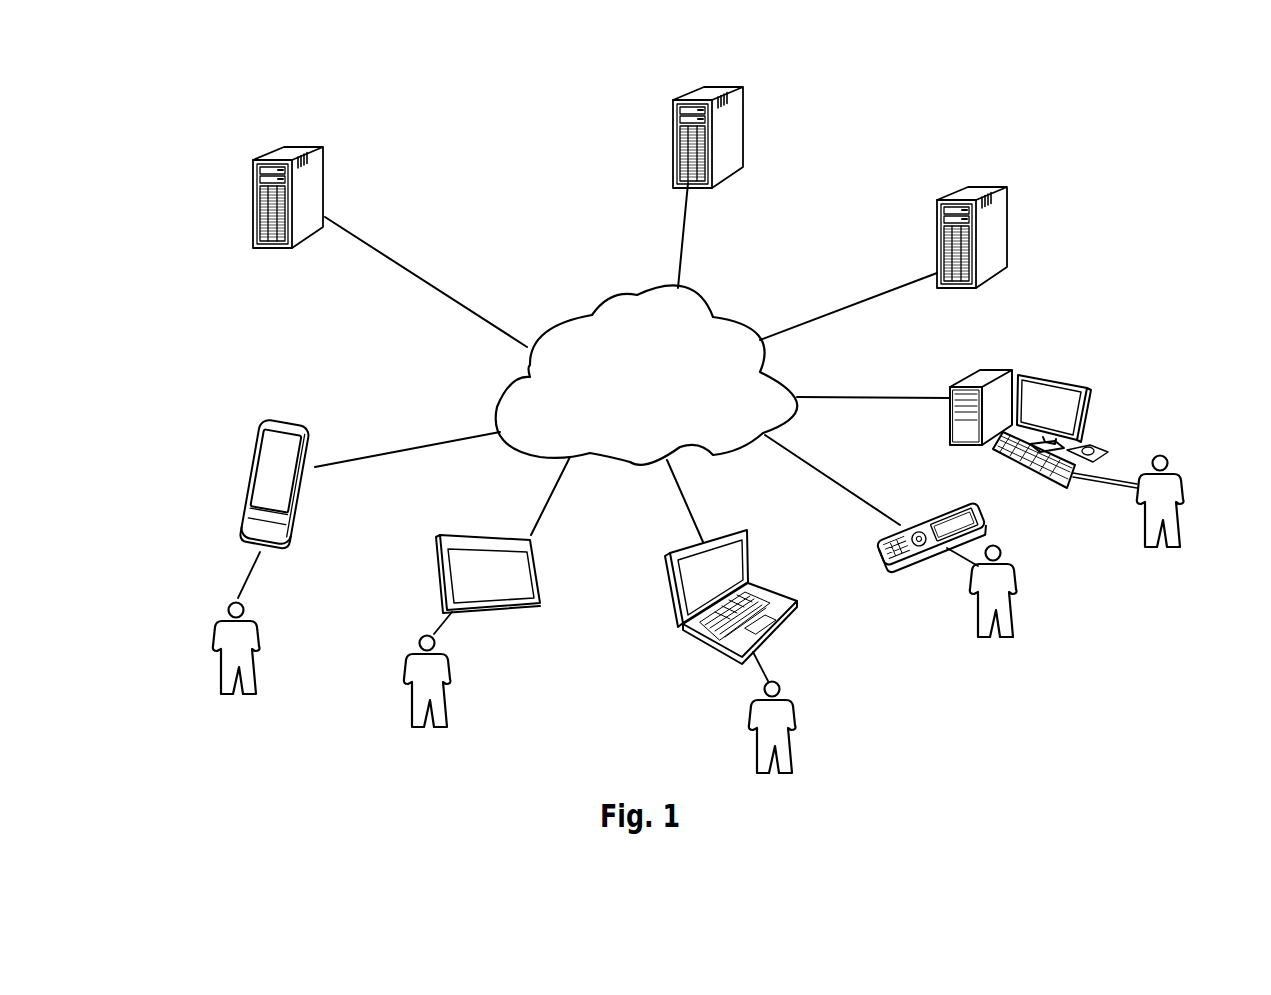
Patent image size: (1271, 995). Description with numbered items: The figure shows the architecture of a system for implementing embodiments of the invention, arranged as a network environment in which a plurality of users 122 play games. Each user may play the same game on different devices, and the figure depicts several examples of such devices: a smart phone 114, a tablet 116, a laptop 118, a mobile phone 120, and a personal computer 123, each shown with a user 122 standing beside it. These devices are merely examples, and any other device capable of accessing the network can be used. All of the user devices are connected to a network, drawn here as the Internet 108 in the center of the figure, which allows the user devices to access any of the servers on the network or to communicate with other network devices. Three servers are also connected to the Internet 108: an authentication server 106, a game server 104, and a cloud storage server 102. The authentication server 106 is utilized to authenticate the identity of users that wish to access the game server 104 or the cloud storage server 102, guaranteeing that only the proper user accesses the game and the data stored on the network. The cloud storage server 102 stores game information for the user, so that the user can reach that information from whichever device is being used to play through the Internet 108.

The cloud storage server 102 is at (262, 208).
The game server 104 is at (993, 250).
The authentication server 106 is at (686, 152).
The Internet 108 is at (550, 373).
The smart phone 114 is at (273, 470).
The tablet 116 is at (468, 580).
The laptop 118 is at (728, 555).
The mobile phone 120 is at (938, 512).
The users 122 is at (227, 638).
The personal computer 123 is at (1070, 410).